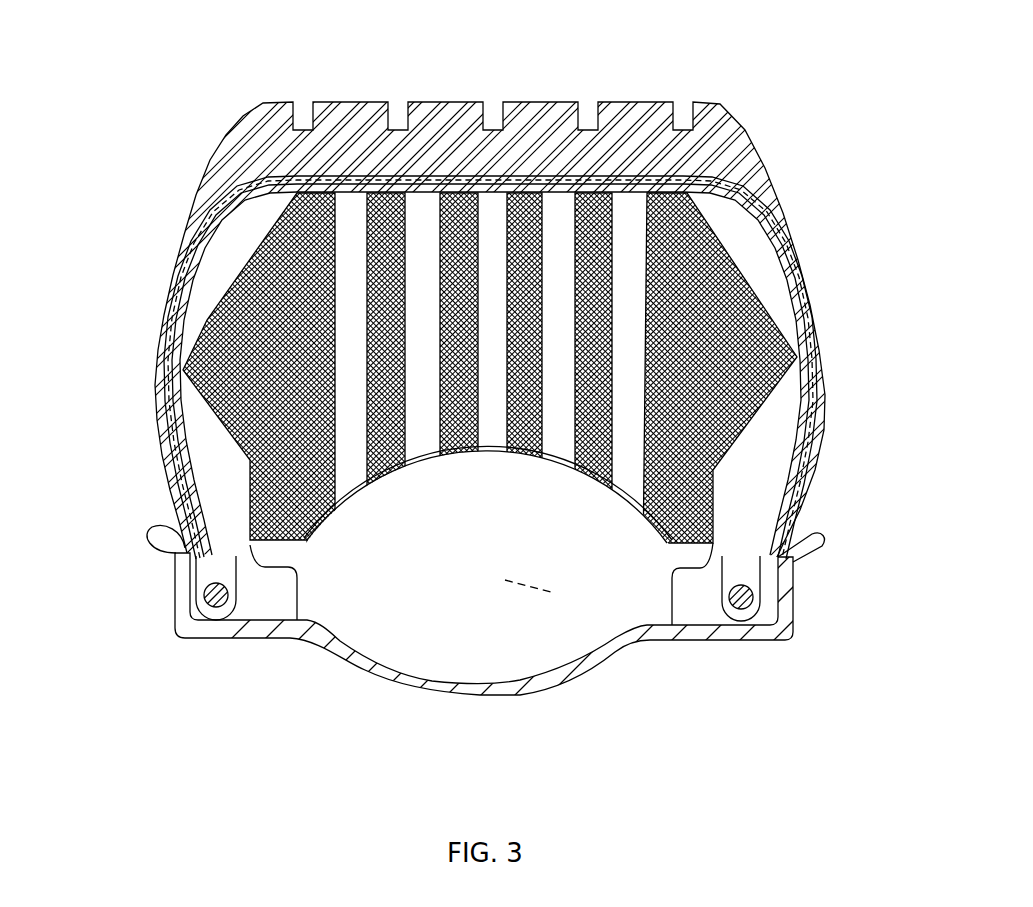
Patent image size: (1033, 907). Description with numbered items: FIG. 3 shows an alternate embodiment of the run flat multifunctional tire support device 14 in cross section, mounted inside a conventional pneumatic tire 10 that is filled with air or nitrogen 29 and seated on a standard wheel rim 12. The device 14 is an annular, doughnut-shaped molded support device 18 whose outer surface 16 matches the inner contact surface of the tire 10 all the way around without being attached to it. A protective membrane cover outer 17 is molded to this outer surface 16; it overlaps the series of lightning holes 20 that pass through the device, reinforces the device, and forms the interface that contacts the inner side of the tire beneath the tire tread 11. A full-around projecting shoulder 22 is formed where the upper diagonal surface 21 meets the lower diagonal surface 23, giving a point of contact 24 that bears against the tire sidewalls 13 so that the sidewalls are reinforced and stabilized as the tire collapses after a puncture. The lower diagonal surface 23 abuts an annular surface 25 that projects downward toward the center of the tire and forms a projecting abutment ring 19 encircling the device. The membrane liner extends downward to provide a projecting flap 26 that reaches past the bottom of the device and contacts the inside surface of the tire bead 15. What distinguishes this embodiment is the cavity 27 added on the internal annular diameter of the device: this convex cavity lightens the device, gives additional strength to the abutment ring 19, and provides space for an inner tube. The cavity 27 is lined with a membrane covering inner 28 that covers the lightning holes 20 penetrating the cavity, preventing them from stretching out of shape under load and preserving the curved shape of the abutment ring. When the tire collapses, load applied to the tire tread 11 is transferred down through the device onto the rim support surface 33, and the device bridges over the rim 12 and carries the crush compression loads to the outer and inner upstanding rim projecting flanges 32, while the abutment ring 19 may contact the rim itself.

The tire 10 is at (276, 103).
The tire tread 11 is at (663, 102).
The rim 12 is at (700, 627).
The tire sidewalls 13 is at (817, 320).
The multifunctional tire support device 14 is at (377, 240).
The tire bead 15 is at (760, 680).
The outer surface 16 is at (423, 188).
The membrane cover outer 17 is at (503, 215).
The molded support device 18 is at (217, 190).
The abutment ring 19 is at (790, 483).
The lightning holes 20 is at (625, 220).
The upper diagonal surface 21 is at (733, 257).
The projecting shoulder 22 is at (280, 268).
The lower diagonal surface 23 is at (805, 462).
The point of contact 24 is at (823, 423).
The annular surface 25 is at (180, 508).
The projecting flap 26 is at (277, 593).
The cavity 27 is at (268, 618).
The membrane covering inner 28 is at (363, 505).
The air/nitrogen 29 is at (522, 590).
The rim projecting flange 32 is at (157, 528).
The rim support surface 33 is at (737, 603).